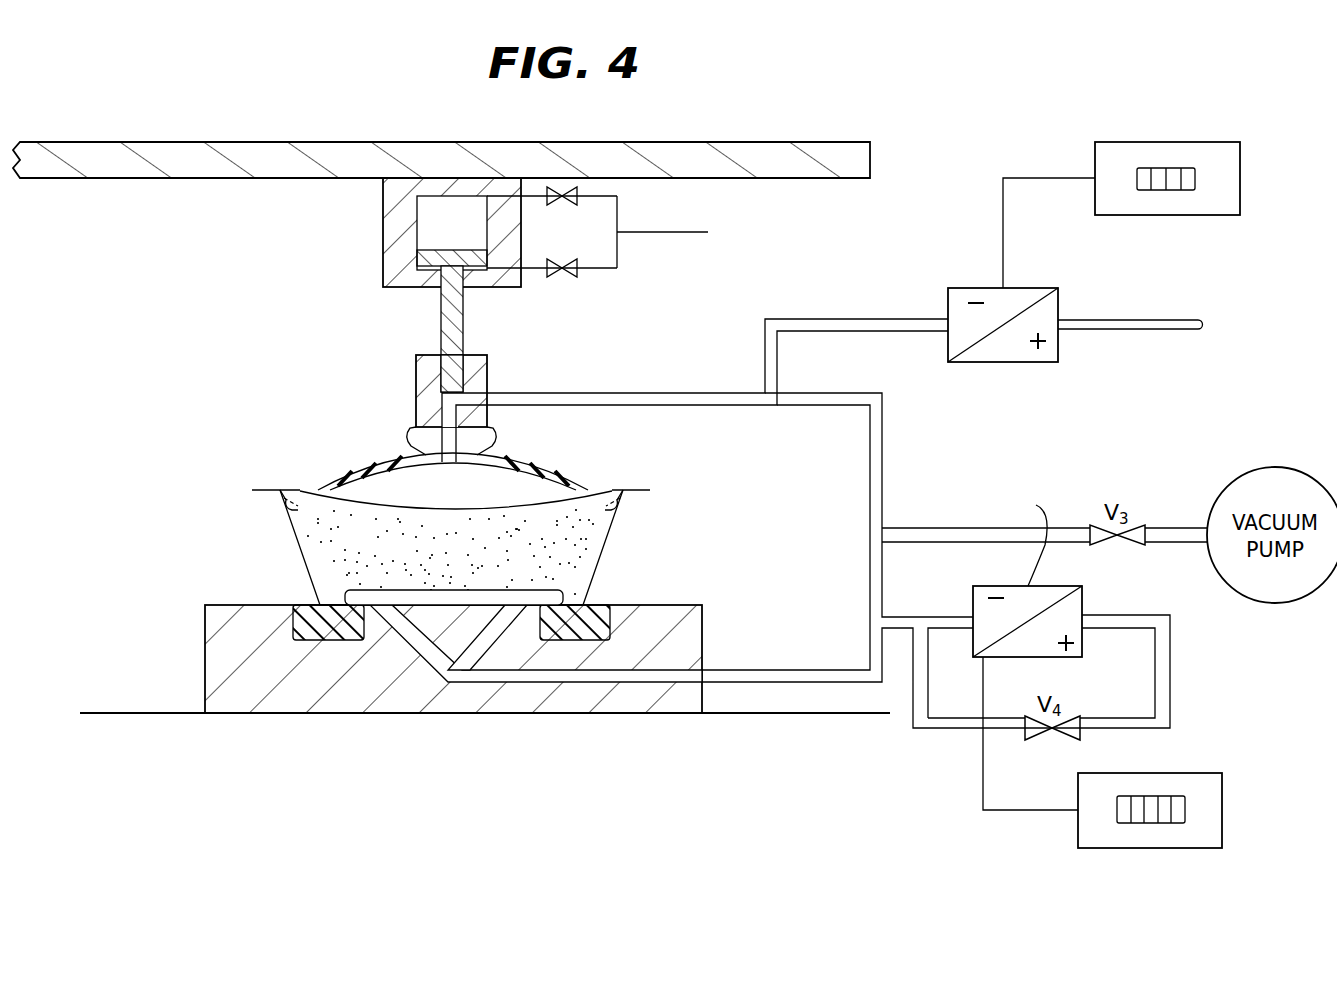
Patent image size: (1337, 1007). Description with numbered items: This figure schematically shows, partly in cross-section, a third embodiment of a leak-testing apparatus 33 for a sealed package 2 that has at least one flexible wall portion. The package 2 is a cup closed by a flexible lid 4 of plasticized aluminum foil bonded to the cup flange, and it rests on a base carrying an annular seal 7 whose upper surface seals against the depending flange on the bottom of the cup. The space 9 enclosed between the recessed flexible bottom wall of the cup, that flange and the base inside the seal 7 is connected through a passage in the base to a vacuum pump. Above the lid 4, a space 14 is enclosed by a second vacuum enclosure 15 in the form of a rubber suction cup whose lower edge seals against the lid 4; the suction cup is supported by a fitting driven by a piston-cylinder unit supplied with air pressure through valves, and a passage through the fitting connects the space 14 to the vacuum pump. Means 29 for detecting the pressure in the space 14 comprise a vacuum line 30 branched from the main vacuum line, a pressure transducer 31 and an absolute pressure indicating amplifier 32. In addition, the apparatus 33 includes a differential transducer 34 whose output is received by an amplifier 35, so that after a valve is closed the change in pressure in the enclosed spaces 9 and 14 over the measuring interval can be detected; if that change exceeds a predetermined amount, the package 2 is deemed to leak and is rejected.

The sealed package 2 is at (628, 493).
The lid 4 is at (293, 462).
The annular seal 7 is at (598, 606).
The space 9 is at (350, 600).
The space 14 is at (396, 482).
The second vacuum enclosure 15 is at (520, 464).
The means for detecting the pressure 29 is at (1183, 352).
The vacuum line 30 is at (797, 318).
The pressure transducer 31 is at (972, 287).
The absolute pressure indicating amplifier 32 is at (1152, 215).
The apparatus 33 is at (158, 298).
The differential transducer 34 is at (1082, 643).
The amplifier 35 is at (1190, 773).